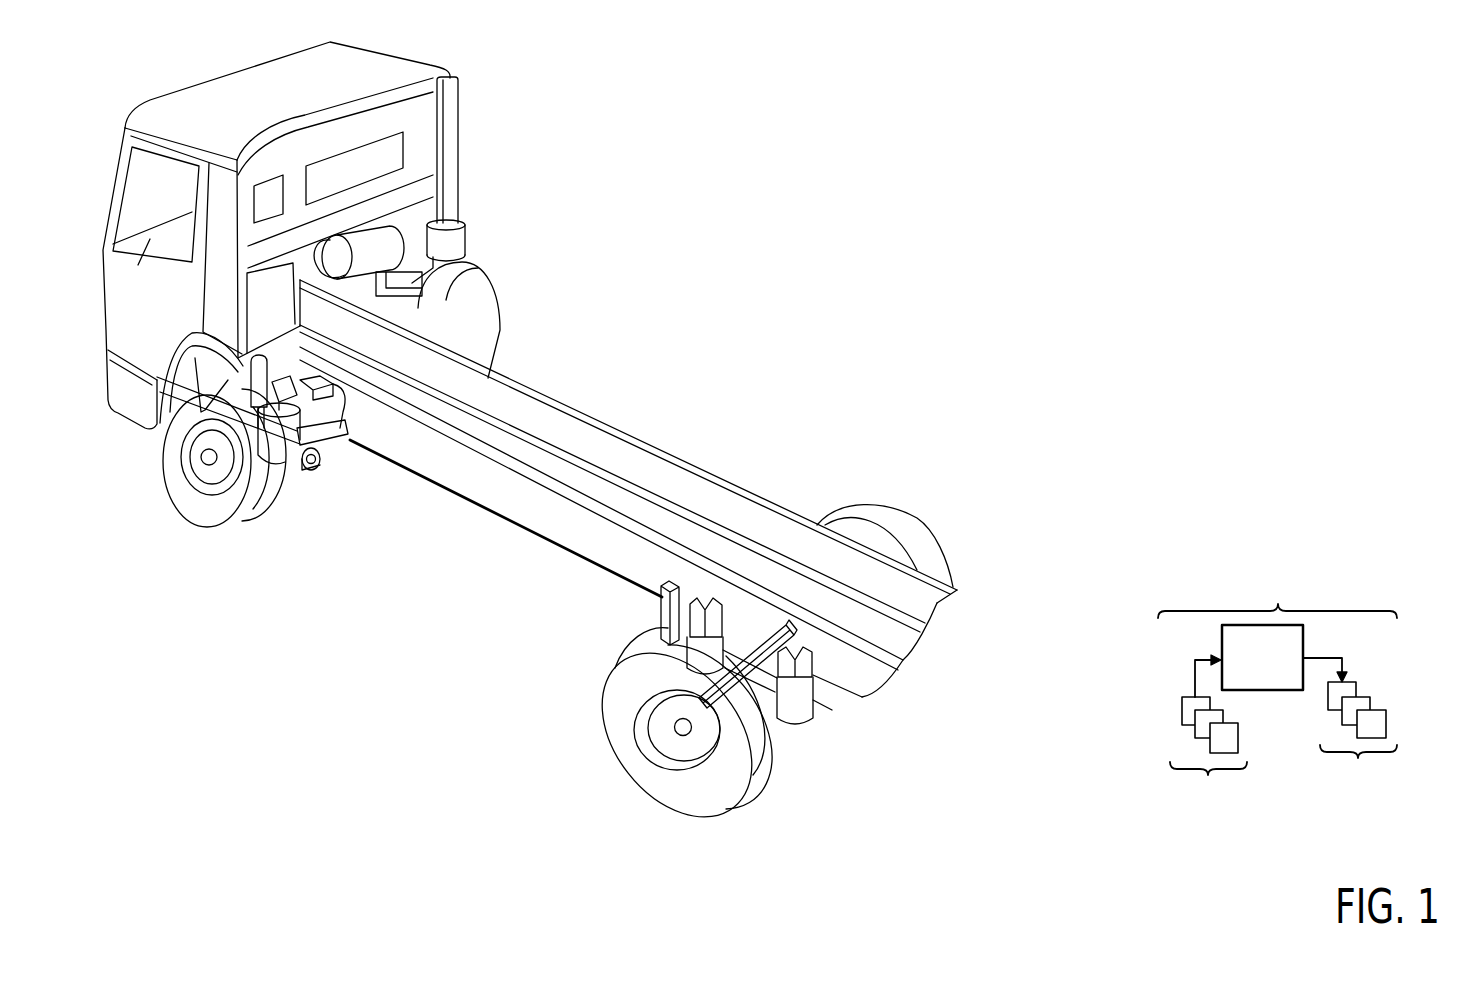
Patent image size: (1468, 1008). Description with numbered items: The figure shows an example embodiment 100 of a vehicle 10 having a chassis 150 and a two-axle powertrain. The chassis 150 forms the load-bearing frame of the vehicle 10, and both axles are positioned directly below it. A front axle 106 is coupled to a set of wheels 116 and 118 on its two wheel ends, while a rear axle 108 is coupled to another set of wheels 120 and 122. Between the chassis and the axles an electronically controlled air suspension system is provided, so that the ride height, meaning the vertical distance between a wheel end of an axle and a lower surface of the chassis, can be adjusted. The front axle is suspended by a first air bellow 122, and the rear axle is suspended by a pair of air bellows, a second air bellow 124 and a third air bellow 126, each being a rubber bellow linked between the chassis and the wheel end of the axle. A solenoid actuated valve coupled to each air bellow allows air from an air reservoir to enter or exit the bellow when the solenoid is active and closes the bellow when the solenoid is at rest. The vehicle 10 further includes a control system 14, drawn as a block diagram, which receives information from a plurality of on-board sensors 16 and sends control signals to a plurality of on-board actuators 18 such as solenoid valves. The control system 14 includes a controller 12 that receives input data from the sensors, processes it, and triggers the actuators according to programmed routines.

The example embodiment 100 is at (1219, 42).
The vehicle 10 is at (808, 88).
The controller 12 is at (1273, 672).
The control system 14 is at (1277, 559).
The sensors 16 is at (1208, 736).
The actuators 18 is at (1353, 730).
The front axle 106 is at (207, 462).
The rear axle 108 is at (680, 728).
The wheel 116 is at (243, 510).
The wheel 118 is at (473, 307).
The wheel 120 is at (687, 800).
The first air bellow 122 is at (278, 434).
The second air bellow 124 is at (698, 657).
The third air bellow 126 is at (807, 698).
The chassis 150 is at (515, 505).